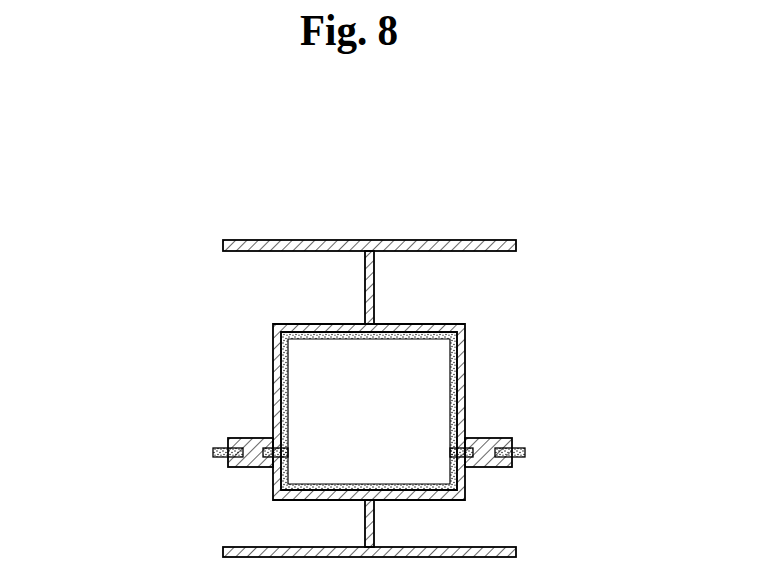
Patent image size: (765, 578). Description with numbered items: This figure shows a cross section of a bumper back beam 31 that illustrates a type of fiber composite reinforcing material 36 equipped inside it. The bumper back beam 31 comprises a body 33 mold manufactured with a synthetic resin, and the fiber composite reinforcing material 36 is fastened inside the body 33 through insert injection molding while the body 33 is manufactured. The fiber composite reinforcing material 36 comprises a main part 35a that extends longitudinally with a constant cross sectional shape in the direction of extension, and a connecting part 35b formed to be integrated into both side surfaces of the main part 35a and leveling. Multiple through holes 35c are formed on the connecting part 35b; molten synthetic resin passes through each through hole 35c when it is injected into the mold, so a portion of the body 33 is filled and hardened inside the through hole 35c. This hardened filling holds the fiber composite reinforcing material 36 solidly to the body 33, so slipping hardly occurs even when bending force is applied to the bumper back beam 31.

The bumper back beam 31 is at (500, 206).
The body 33 is at (260, 240).
The main part 35a is at (290, 396).
The connecting part 35b is at (212, 452).
The through hole 35c is at (505, 467).
The fiber composite reinforcing material 36 is at (98, 388).